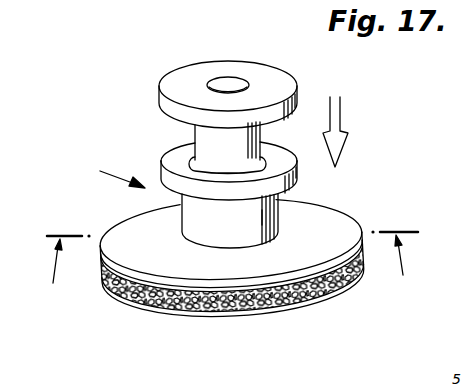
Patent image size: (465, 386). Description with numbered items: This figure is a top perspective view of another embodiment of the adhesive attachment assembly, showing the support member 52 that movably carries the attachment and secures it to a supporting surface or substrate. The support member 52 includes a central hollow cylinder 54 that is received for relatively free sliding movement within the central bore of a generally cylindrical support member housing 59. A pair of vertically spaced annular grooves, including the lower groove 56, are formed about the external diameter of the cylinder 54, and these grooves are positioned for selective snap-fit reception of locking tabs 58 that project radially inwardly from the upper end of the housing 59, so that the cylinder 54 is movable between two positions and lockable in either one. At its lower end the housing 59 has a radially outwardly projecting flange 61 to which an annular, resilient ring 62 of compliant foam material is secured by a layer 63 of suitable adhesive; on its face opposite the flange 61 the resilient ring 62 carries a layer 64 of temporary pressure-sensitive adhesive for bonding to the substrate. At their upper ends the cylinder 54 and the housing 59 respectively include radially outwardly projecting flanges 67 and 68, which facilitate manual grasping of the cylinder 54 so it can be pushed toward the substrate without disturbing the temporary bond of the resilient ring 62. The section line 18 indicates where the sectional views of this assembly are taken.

The section line 18- 18 is at (233, 270).
The support member 52 is at (109, 174).
The central hollow cylinder 54 is at (209, 134).
The annular groove 56 is at (239, 172).
The locking tabs 58 is at (203, 172).
The support member housing 59 is at (262, 221).
The flange 61 is at (125, 223).
The resilient ring 62 is at (305, 309).
The layer of adhesive 63 is at (243, 290).
The layer of temporary adhesive material 64 is at (188, 316).
The flange 67 is at (183, 78).
The flange 68 is at (175, 157).